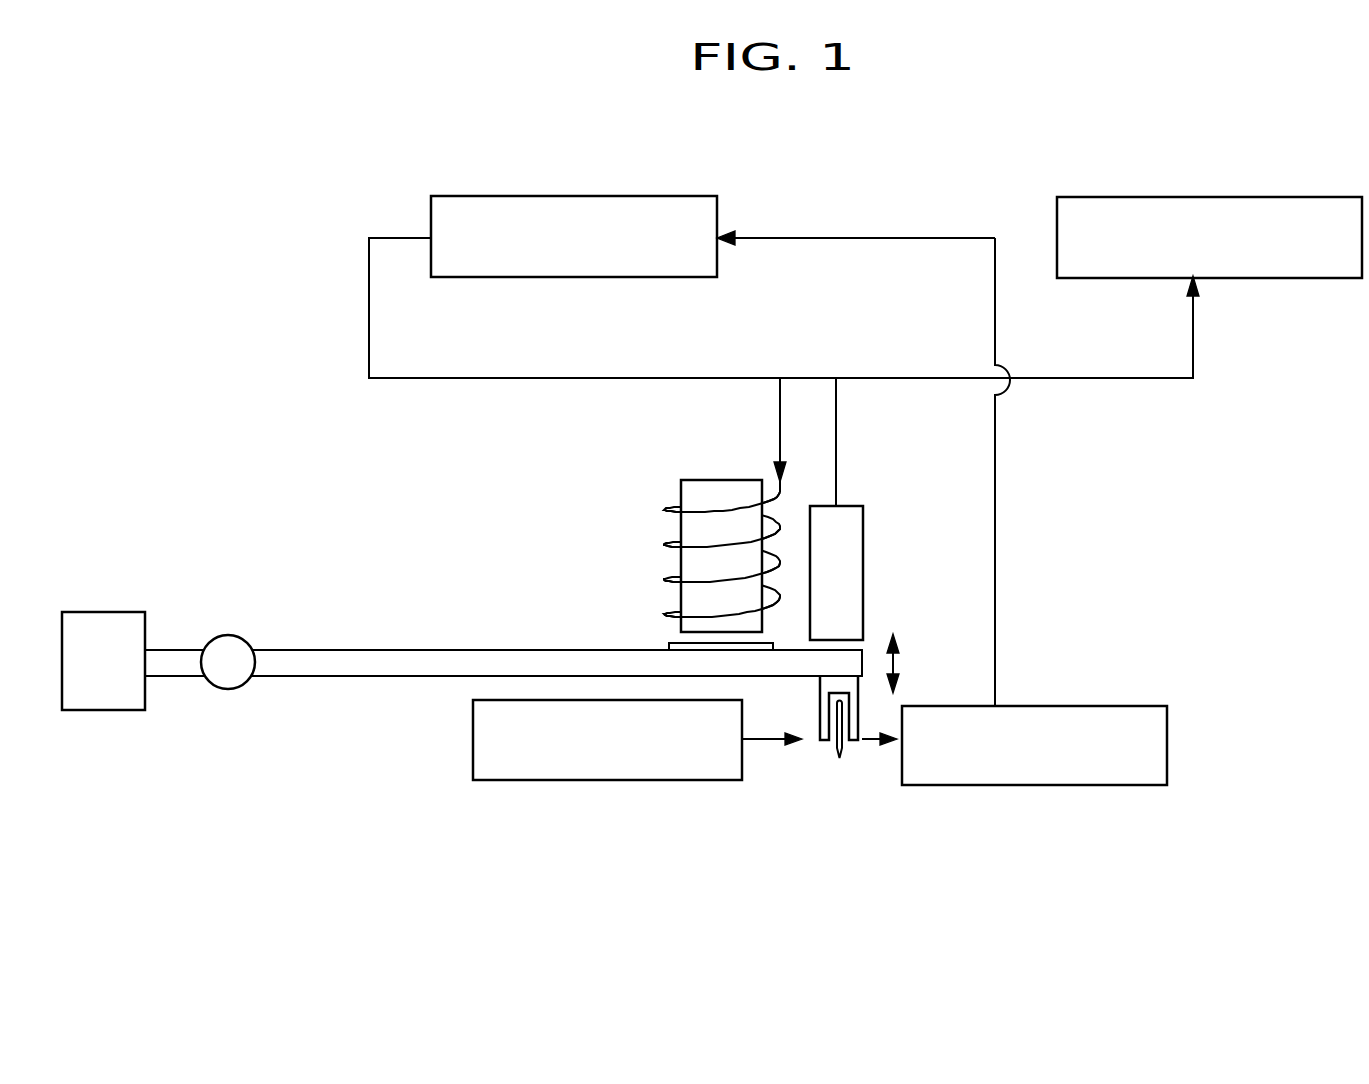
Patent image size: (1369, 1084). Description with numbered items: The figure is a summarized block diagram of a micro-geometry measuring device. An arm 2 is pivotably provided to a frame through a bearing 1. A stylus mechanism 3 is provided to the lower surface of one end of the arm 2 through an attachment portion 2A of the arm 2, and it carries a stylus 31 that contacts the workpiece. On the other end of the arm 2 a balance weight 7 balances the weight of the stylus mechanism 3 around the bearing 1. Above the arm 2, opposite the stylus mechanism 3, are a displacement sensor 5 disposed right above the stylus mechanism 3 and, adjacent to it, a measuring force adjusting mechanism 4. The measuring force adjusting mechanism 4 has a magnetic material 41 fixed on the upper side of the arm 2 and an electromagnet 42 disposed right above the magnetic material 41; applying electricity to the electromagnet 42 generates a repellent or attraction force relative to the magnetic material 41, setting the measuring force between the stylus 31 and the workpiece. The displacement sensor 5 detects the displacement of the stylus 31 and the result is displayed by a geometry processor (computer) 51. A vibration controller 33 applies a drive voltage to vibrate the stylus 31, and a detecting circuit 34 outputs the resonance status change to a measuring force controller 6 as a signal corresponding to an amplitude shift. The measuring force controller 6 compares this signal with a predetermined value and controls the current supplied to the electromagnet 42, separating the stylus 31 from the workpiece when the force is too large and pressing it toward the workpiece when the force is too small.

The bearing 1 is at (238, 636).
The arm 2 is at (355, 677).
The attachment portion 2A is at (820, 713).
The stylus mechanism 3 is at (781, 781).
The stylus 31 is at (838, 757).
The vibration controller 33 is at (570, 782).
The detecting circuit 34 is at (1085, 705).
The measuring force adjusting mechanism 4 is at (668, 524).
The magnetic material 41 is at (672, 643).
The electromagnet 42 is at (686, 563).
The displacement sensor 5 is at (853, 506).
The geometry processor (computer) 51 is at (1192, 197).
The measuring force controller 6 is at (581, 196).
The balance weight 7 is at (103, 710).